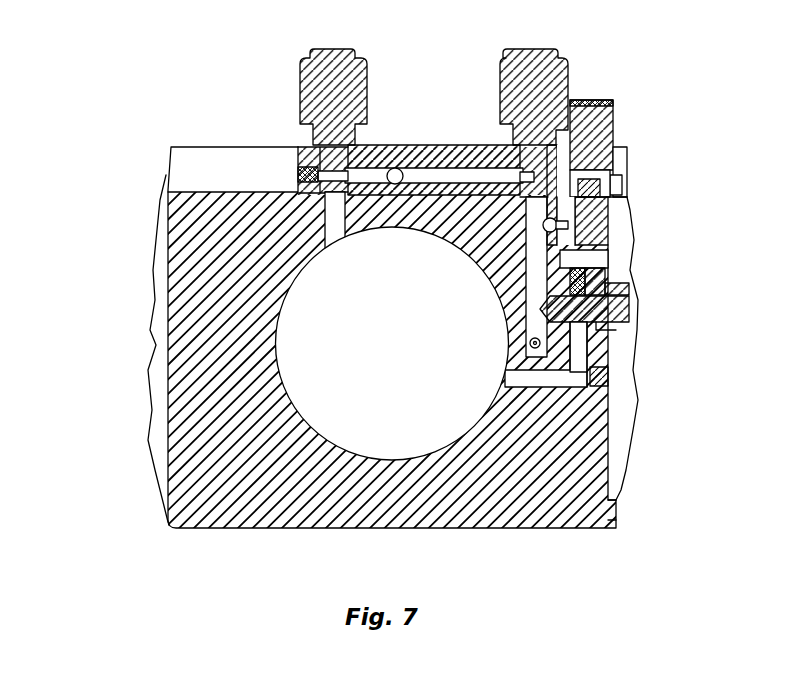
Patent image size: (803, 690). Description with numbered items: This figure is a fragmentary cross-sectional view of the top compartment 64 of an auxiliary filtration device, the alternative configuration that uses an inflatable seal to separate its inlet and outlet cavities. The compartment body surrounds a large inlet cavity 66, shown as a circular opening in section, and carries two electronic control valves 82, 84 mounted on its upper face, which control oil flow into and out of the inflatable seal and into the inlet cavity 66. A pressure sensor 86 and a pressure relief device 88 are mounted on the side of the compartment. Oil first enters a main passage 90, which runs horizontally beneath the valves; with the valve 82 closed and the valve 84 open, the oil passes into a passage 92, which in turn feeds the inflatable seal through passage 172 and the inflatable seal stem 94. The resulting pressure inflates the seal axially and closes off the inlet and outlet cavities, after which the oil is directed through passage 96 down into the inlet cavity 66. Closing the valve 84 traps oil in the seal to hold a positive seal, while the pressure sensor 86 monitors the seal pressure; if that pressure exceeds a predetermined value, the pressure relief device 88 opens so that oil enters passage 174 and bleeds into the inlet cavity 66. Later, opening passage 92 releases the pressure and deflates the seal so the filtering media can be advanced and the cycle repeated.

The top compartment 64 is at (157, 90).
The inlet cavity 66 is at (358, 420).
The electronic control valve 82 is at (328, 50).
The electronic control valve 84 is at (540, 50).
The pressure sensor 86 is at (600, 100).
The pressure relief device 88 is at (618, 285).
The main passage 90 is at (396, 168).
The passage 92 is at (526, 225).
The stem 94 is at (600, 325).
The passage 96 is at (318, 230).
The passage 172 is at (545, 346).
The passage 174 is at (580, 390).